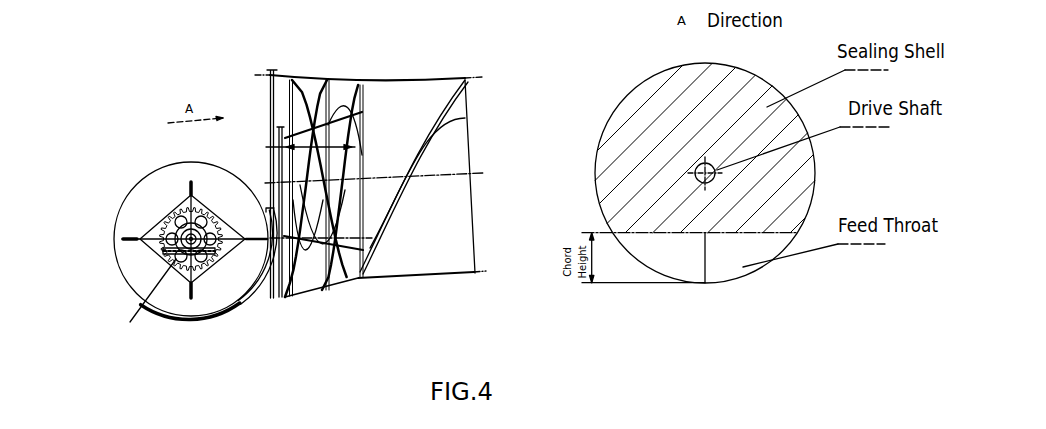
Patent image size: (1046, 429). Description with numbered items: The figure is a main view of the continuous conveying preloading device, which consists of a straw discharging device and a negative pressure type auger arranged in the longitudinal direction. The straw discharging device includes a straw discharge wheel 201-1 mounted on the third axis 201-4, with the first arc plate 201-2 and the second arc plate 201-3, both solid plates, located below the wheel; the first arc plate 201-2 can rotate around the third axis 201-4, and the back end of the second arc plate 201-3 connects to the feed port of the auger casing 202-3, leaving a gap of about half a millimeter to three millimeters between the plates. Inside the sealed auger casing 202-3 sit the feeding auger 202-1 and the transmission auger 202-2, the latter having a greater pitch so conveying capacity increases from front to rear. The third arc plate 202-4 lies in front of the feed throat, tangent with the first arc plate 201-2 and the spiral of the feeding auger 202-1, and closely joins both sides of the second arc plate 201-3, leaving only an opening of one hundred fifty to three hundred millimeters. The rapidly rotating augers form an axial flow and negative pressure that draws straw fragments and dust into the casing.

The straw discharge wheel 201-1 is at (180, 204).
The first arc plate 201-2 is at (143, 315).
The second arc plate 201-3 is at (142, 310).
The third axis 201-4 is at (168, 232).
The feeding auger 202-1 is at (322, 290).
The transmission auger 202-2 is at (370, 262).
The auger casing 202-3 is at (280, 296).
The third arc plate 202-4 is at (280, 285).